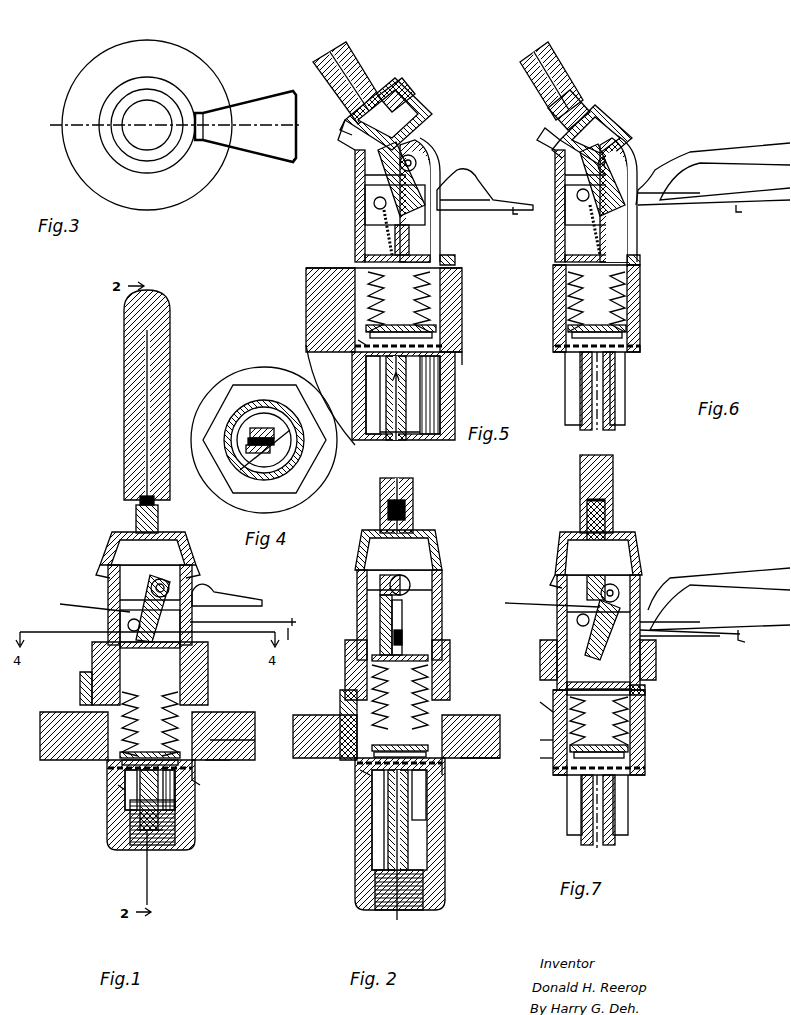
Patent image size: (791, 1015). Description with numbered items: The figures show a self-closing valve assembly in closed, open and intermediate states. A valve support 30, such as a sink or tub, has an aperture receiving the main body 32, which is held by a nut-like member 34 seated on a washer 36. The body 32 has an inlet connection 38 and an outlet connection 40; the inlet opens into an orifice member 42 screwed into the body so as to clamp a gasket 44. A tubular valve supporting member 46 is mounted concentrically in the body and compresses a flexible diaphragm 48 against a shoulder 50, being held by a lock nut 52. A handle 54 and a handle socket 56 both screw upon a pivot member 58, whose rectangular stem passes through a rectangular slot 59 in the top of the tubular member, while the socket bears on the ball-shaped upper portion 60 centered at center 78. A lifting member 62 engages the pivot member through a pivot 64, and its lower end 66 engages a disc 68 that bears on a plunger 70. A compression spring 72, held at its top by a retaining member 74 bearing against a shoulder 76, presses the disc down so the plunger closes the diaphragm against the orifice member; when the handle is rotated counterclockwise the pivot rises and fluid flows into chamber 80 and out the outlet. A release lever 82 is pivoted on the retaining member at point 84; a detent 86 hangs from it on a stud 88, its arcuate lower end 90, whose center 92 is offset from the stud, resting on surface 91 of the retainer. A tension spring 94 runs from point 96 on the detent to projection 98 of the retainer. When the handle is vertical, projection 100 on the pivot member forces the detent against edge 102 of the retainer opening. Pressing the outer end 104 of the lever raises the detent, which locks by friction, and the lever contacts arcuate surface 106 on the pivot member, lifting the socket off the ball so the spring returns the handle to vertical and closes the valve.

In FIG. 1, the valve support 30 is at (248, 712).
In FIG. 2, the valve support 30 is at (480, 712).
In FIG. 7, the valve support 30 is at (553, 706).
In FIG. 3, the main body 32 is at (198, 55).
In FIG. 1, the main body 32 is at (196, 888).
In FIG. 2, the main body 32 is at (445, 870).
In FIG. 5, the main body 32 is at (380, 395).
In FIG. 1, the nut-like member 34 is at (232, 760).
In FIG. 2, the nut-like member 34 is at (484, 758).
In FIG. 7, the nut-like member 34 is at (525, 759).
In FIG. 1, the washer 36 is at (255, 740).
In FIG. 7, the washer 36 is at (525, 741).
In FIG. 1, the inlet connection 38 is at (172, 908).
In FIG. 2, the inlet connection 38 is at (430, 912).
In FIG. 1, the outlet connection 40 is at (176, 830).
In FIG. 5, the outlet connection 40 is at (445, 404).
In FIG. 1, the orifice member 42 is at (176, 836).
In FIG. 2, the orifice member 42 is at (415, 828).
In FIG. 5, the orifice member 42 is at (410, 380).
In FIG. 6, the orifice member 42 is at (615, 384).
In FIG. 7, the orifice member 42 is at (615, 810).
In FIG. 1, the gasket 44 is at (180, 856).
In FIG. 2, the gasket 44 is at (418, 846).
In FIG. 5, the gasket 44 is at (440, 434).
In FIG. 4, the tubular valve supporting member 46 is at (266, 405).
In FIG. 2, the tubular valve supporting member 46 is at (442, 712).
In FIG. 5, the tubular valve supporting member 46 is at (448, 278).
In FIG. 6, the tubular valve supporting member 46 is at (642, 285).
In FIG. 7, the tubular valve supporting member 46 is at (645, 716).
In FIG. 1, the flexible diaphragm 48 is at (200, 782).
In FIG. 2, the flexible diaphragm 48 is at (445, 776).
In FIG. 5, the flexible diaphragm 48 is at (458, 358).
In FIG. 6, the flexible diaphragm 48 is at (642, 348).
In FIG. 7, the flexible diaphragm 48 is at (645, 772).
In FIG. 1, the shoulder 50 is at (110, 790).
In FIG. 2, the shoulder 50 is at (360, 782).
In FIG. 5, the shoulder 50 is at (355, 340).
In FIG. 4, the lock nut 52 is at (235, 408).
In FIG. 1, the lock nut 52 is at (208, 658).
In FIG. 2, the lock nut 52 is at (450, 655).
In FIG. 7, the lock nut 52 is at (656, 660).
In FIG. 3, the handle 54 is at (138, 113).
In FIG. 1, the handle 54 is at (168, 302).
In FIG. 2, the handle 54 is at (415, 487).
In FIG. 5, the handle 54 is at (360, 70).
In FIG. 6, the handle 54 is at (558, 68).
In FIG. 7, the handle 54 is at (614, 470).
In FIG. 3, the handle socket 56 is at (131, 88).
In FIG. 1, the handle socket 56 is at (176, 532).
In FIG. 2, the handle socket 56 is at (425, 540).
In FIG. 5, the handle socket 56 is at (395, 112).
In FIG. 6, the handle socket 56 is at (606, 112).
In FIG. 7, the handle socket 56 is at (630, 552).
In FIG. 1, the pivot member 58 is at (133, 535).
In FIG. 2, the pivot member 58 is at (384, 524).
In FIG. 5, the pivot member 58 is at (412, 115).
In FIG. 6, the pivot member 58 is at (572, 105).
In FIG. 7, the pivot member 58 is at (612, 512).
In FIG. 1, the rectangular slot 59 is at (110, 560).
In FIG. 5, the rectangular slot 59 is at (405, 135).
In FIG. 6, the rectangular slot 59 is at (608, 140).
In FIG. 7, the rectangular slot 59 is at (570, 545).
In FIG. 1, the ball-shaped upper portion 60 is at (192, 572).
In FIG. 2, the ball-shaped upper portion 60 is at (442, 560).
In FIG. 5, the ball-shaped upper portion 60 is at (432, 165).
In FIG. 6, the ball-shaped upper portion 60 is at (630, 165).
In FIG. 7, the ball-shaped upper portion 60 is at (640, 588).
In FIG. 4, the lifting member 62 is at (245, 425).
In FIG. 1, the lifting member 62 is at (160, 640).
In FIG. 2, the lifting member 62 is at (405, 615).
In FIG. 5, the lifting member 62 is at (405, 212).
In FIG. 6, the lifting member 62 is at (618, 228).
In FIG. 7, the lifting member 62 is at (620, 672).
In FIG. 1, the pivot 64 is at (168, 588).
In FIG. 2, the pivot 64 is at (410, 585).
In FIG. 5, the pivot 64 is at (416, 165).
In FIG. 6, the pivot 64 is at (570, 152).
In FIG. 7, the pivot 64 is at (602, 593).
In FIG. 1, the lower end of lifting member 66 is at (92, 762).
In FIG. 2, the lower end of lifting member 66 is at (375, 758).
In FIG. 5, the lower end of lifting member 66 is at (352, 320).
In FIG. 6, the lower end of lifting member 66 is at (566, 333).
In FIG. 7, the lower end of lifting member 66 is at (626, 758).
In FIG. 1, the disc 68 is at (85, 748).
In FIG. 2, the disc 68 is at (372, 750).
In FIG. 5, the disc 68 is at (352, 302).
In FIG. 6, the disc 68 is at (566, 320).
In FIG. 7, the disc 68 is at (628, 748).
In FIG. 1, the plunger 70 is at (104, 774).
In FIG. 2, the plunger 70 is at (358, 772).
In FIG. 5, the plunger 70 is at (352, 350).
In FIG. 6, the plunger 70 is at (566, 348).
In FIG. 7, the plunger 70 is at (575, 778).
In FIG. 1, the compression spring 72 is at (200, 695).
In FIG. 2, the compression spring 72 is at (345, 708).
In FIG. 5, the compression spring 72 is at (462, 306).
In FIG. 6, the compression spring 72 is at (642, 308).
In FIG. 7, the compression spring 72 is at (640, 726).
In FIG. 1, the retaining member 74 is at (120, 610).
In FIG. 2, the retaining member 74 is at (367, 596).
In FIG. 5, the retaining member 74 is at (365, 178).
In FIG. 6, the retaining member 74 is at (565, 181).
In FIG. 7, the retaining member 74 is at (567, 612).
In FIG. 1, the shoulder 76 is at (108, 598).
In FIG. 2, the shoulder 76 is at (357, 572).
In FIG. 5, the shoulder 76 is at (354, 150).
In FIG. 6, the shoulder 76 is at (550, 142).
In FIG. 7, the shoulder 76 is at (557, 575).
In FIG. 1, the center of surface 78 is at (190, 562).
In FIG. 1, the chamber 80 is at (126, 820).
In FIG. 2, the chamber 80 is at (420, 815).
In FIG. 5, the chamber 80 is at (368, 378).
In FIG. 3, the release lever 82 is at (243, 106).
In FIG. 1, the release lever 82 is at (238, 596).
In FIG. 5, the release lever 82 is at (470, 180).
In FIG. 6, the release lever 82 is at (680, 200).
In FIG. 7, the release lever 82 is at (676, 592).
In FIG. 1, the pivot point 84 is at (200, 621).
In FIG. 7, the pivot point 84 is at (645, 621).
In FIG. 1, the detent 86 is at (120, 640).
In FIG. 5, the detent 86 is at (366, 225).
In FIG. 6, the detent 86 is at (567, 226).
In FIG. 7, the detent 86 is at (540, 658).
In FIG. 1, the stud 88 is at (128, 627).
In FIG. 5, the stud 88 is at (374, 206).
In FIG. 6, the stud 88 is at (577, 198).
In FIG. 7, the stud 88 is at (577, 620).
In FIG. 1, the arcuate lower end 90 is at (118, 655).
In FIG. 5, the arcuate lower end 90 is at (365, 258).
In FIG. 6, the arcuate lower end 90 is at (565, 258).
In FIG. 7, the arcuate lower end 90 is at (567, 684).
In FIG. 1, the surface of retainer 91 is at (80, 680).
In FIG. 5, the surface of retainer 91 is at (455, 258).
In FIG. 6, the surface of retainer 91 is at (642, 262).
In FIG. 7, the surface of retainer 91 is at (645, 690).
In FIG. 5, the center of arc 92 is at (370, 240).
In FIG. 4, the tension spring 94 is at (275, 460).
In FIG. 2, the tension spring 94 is at (392, 640).
In FIG. 5, the tension spring 94 is at (412, 240).
In FIG. 4, the point 96 is at (242, 448).
In FIG. 2, the point 96 is at (410, 632).
In FIG. 6, the point 96 is at (610, 218).
In FIG. 4, the projection 98 is at (275, 442).
In FIG. 2, the projection 98 is at (430, 668).
In FIG. 5, the projection 100 is at (452, 200).
In FIG. 6, the projection 100 is at (640, 191).
In FIG. 7, the projection 100 is at (680, 641).
In FIG. 7, the edge of opening 102 is at (532, 713).
In FIG. 3, the outer end of release lever 104 is at (280, 165).
In FIG. 1, the outer end of release lever 104 is at (294, 640).
In FIG. 5, the outer end of release lever 104 is at (512, 216).
In FIG. 6, the outer end of release lever 104 is at (750, 222).
In FIG. 7, the outer end of release lever 104 is at (751, 644).
In FIG. 1, the arcuate surface 106 is at (79, 603).
In FIG. 7, the arcuate surface 106 is at (540, 601).